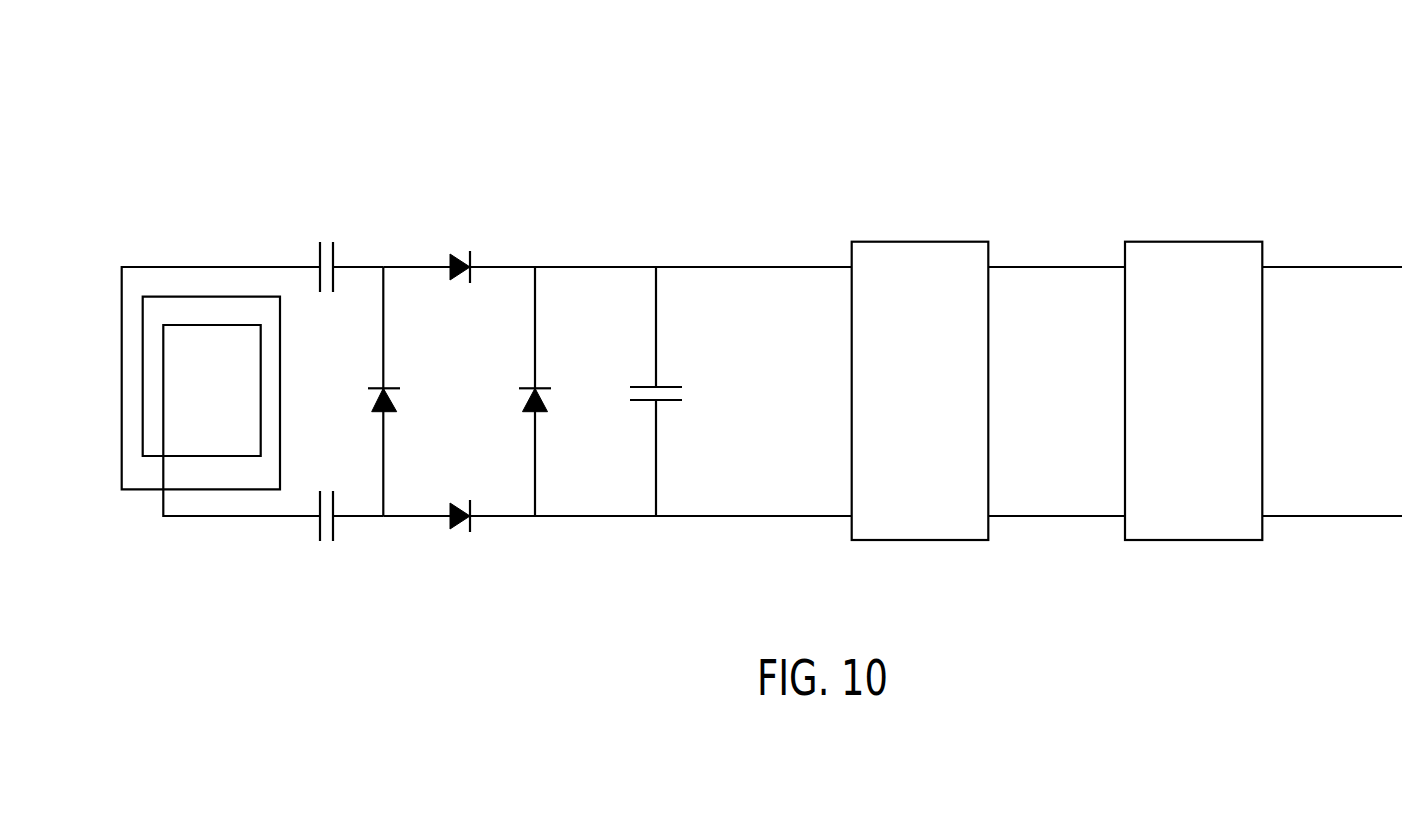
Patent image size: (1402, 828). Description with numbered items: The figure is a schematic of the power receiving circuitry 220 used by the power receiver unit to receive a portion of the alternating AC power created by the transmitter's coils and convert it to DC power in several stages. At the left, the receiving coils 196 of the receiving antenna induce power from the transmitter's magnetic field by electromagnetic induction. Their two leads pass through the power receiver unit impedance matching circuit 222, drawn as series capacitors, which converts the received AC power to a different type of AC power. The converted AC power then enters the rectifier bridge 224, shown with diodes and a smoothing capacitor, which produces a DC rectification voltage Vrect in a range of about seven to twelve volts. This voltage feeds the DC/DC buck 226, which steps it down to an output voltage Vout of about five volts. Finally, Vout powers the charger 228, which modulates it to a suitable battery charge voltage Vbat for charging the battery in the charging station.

The power receiving circuitry 220 is at (1107, 78).
The receiving coils 196 is at (122, 378).
The power receiver unit impedance matching circuit 222 is at (367, 211).
The rectifier bridge 224 is at (600, 240).
The DC/DC buck 226 is at (920, 242).
The charger 228 is at (1195, 242).